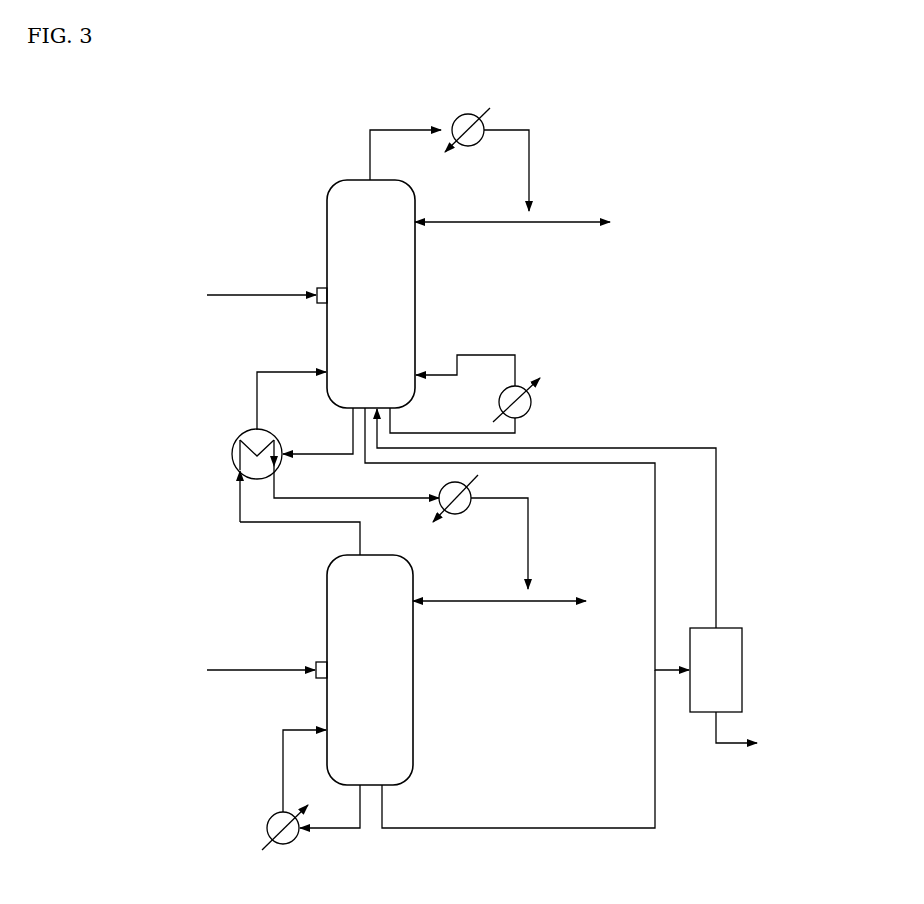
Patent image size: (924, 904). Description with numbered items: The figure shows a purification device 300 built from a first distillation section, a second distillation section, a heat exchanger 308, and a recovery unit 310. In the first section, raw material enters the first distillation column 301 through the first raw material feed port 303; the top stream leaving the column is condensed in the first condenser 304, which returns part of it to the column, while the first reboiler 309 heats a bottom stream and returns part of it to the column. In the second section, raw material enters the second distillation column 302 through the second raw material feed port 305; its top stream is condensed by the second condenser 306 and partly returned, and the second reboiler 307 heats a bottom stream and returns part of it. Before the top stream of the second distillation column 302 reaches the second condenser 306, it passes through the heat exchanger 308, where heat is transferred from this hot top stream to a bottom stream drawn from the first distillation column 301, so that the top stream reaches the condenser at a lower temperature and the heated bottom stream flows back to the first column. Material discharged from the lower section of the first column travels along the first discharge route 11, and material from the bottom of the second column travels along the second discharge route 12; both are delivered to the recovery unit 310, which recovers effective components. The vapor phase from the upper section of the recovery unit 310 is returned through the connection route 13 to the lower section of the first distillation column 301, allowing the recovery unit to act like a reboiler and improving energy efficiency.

The purification device 300 is at (175, 90).
The first distillation column 301 is at (325, 236).
The second distillation column 302 is at (325, 590).
The first raw material feed port 303 is at (322, 306).
The first condenser 304 is at (470, 112).
The second raw material feed port 305 is at (316, 658).
The second condenser 306 is at (462, 516).
The second reboiler 307 is at (285, 846).
The heat exchanger 308 is at (232, 453).
The first reboiler 309 is at (533, 407).
The recovery unit 310 is at (744, 661).
The first discharge route 11 is at (592, 465).
The second discharge route 12 is at (547, 826).
The connection route 13 is at (718, 508).